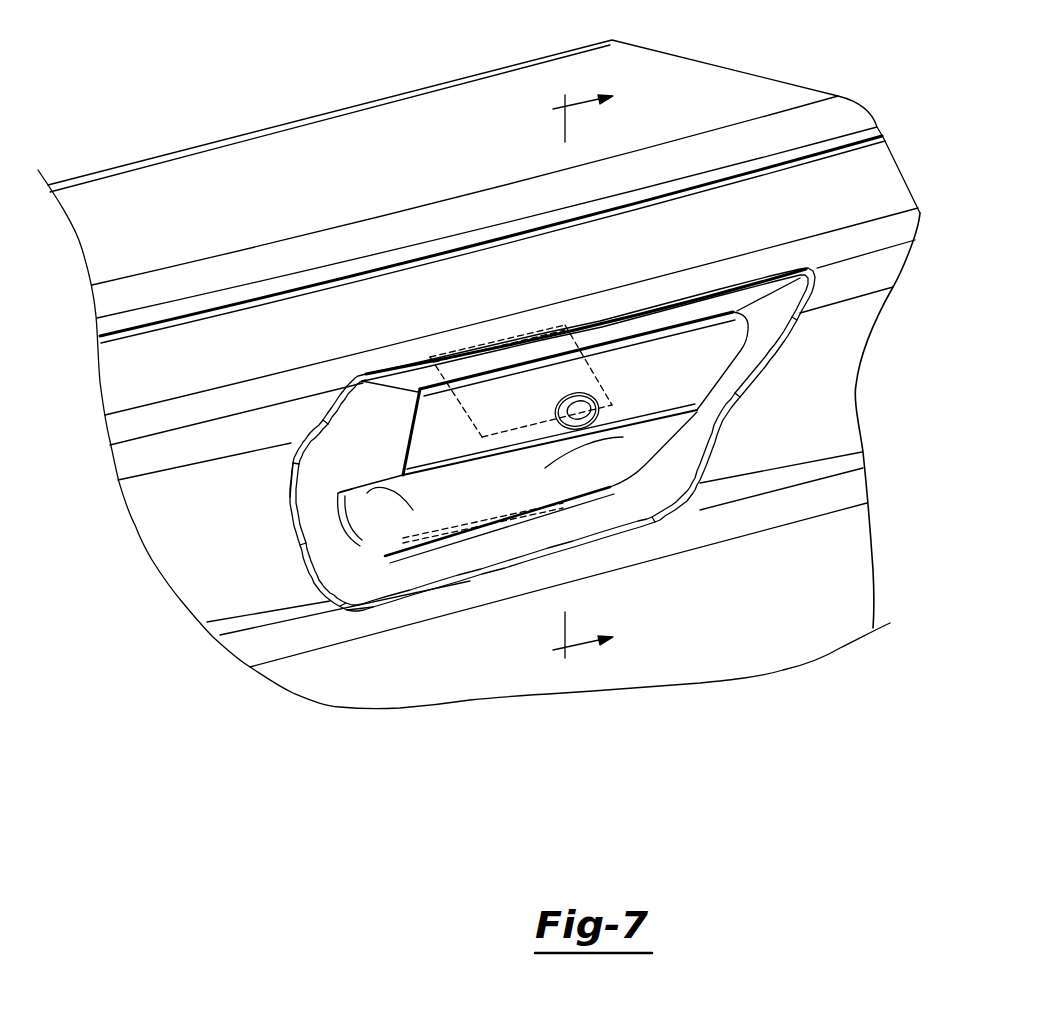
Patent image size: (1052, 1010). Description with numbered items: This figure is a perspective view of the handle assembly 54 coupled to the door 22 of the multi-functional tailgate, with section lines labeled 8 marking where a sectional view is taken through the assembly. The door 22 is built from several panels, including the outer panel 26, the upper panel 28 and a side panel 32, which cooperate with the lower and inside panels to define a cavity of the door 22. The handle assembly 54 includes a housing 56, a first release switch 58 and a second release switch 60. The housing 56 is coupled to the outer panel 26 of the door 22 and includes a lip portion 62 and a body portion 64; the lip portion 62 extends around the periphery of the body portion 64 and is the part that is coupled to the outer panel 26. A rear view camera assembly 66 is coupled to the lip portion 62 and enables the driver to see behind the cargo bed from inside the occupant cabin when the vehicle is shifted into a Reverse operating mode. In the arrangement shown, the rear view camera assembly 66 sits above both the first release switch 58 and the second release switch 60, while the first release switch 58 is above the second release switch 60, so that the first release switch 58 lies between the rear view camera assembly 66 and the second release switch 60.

The door 22 is at (417, 683).
The outer panel 26 is at (693, 660).
The upper panel 28 is at (443, 113).
The side panel 32 is at (857, 387).
The handle assembly 54 is at (335, 623).
The housing 56 is at (655, 532).
The first release switch 58 is at (540, 428).
The second release switch 60 is at (367, 493).
The lip portion 62 is at (713, 480).
The body portion 64 is at (620, 441).
The rear view camera assembly 66 is at (660, 375).
The section line 8- 8 is at (569, 381).